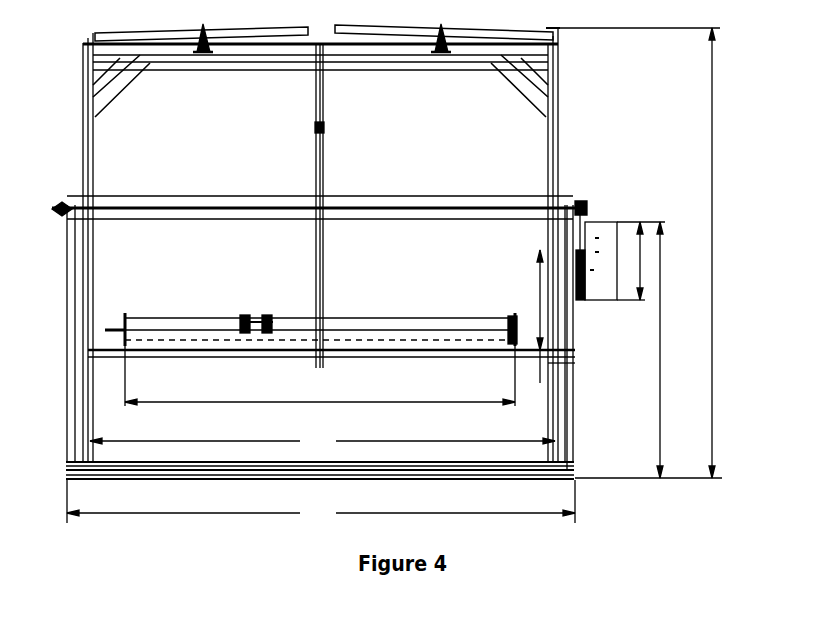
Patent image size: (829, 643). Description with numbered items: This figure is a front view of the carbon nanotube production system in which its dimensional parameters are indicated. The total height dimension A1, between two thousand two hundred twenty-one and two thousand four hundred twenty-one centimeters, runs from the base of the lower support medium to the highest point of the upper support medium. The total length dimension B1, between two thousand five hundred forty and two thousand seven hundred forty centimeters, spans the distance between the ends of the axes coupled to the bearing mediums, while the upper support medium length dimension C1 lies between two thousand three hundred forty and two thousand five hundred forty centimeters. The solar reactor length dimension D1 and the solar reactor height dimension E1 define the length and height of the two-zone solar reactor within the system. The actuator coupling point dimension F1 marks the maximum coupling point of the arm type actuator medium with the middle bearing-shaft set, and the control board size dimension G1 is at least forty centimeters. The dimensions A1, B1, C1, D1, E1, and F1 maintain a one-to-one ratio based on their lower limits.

The total height dimension A1 is at (654, 253).
The total length dimension B1 is at (321, 501).
The upper support medium length dimension C1 is at (322, 439).
The solar reactor length dimension D1 is at (320, 376).
The solar reactor height dimension E1 is at (524, 316).
The actuator coupling point dimension F1 is at (641, 350).
The control board size dimension G1 is at (631, 261).